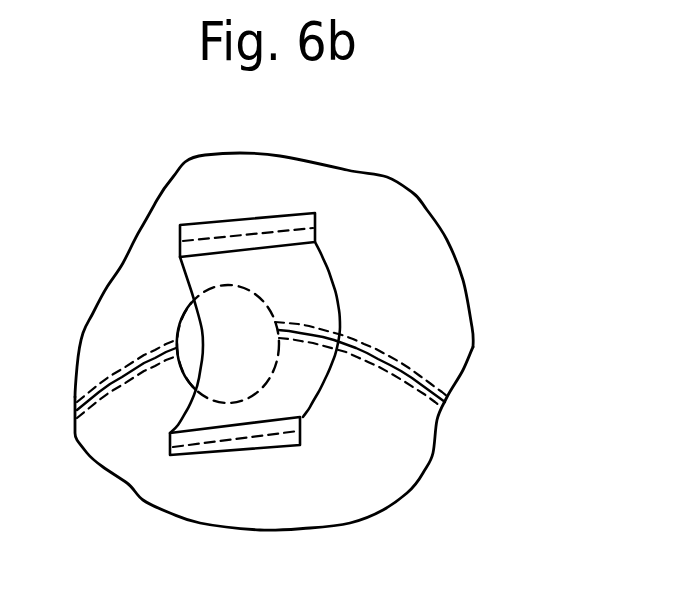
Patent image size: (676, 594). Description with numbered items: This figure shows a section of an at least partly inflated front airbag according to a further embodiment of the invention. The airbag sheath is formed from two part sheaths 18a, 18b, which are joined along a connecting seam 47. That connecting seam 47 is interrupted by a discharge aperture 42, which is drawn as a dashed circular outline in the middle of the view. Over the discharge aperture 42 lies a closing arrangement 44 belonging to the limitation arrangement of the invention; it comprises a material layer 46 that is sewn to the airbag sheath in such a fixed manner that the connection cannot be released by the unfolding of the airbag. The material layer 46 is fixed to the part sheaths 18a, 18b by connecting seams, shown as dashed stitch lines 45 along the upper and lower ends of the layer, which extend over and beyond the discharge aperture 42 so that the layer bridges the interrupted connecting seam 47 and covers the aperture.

The part sheath 18a is at (413, 233).
The part sheath 18b is at (375, 480).
The discharge aperture 42 is at (188, 335).
The closing arrangement 44 is at (157, 243).
The guide web 45 is at (287, 225).
The material layer 46 is at (233, 262).
The connecting seam 47 is at (395, 360).